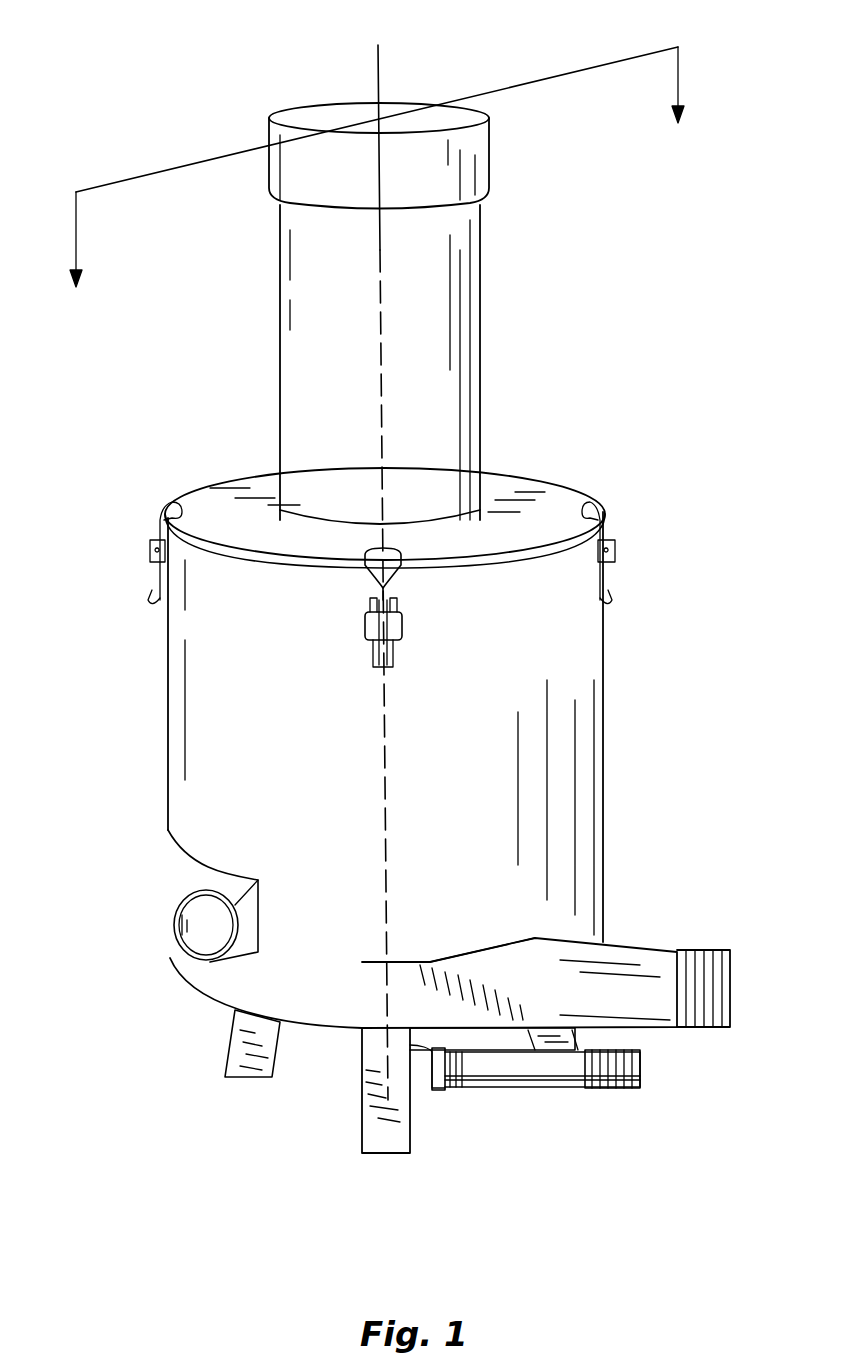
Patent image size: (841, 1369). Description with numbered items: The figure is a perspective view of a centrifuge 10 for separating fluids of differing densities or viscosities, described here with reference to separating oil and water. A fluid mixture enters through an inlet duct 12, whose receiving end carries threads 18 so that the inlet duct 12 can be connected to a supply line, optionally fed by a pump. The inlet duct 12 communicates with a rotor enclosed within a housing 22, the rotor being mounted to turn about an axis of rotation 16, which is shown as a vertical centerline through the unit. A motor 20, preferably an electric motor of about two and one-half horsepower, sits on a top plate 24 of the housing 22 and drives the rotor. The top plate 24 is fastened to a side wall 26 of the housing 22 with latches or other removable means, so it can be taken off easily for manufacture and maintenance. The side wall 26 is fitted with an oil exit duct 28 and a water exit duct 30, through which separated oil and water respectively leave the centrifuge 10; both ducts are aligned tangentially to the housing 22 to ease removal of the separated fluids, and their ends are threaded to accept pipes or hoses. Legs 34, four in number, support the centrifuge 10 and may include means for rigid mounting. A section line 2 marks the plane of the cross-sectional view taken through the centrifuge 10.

The section line 2- 2 is at (376, 176).
The centrifuge 10 is at (682, 404).
The inlet duct 12 is at (550, 1072).
The axis of rotation 16 is at (379, 63).
The threads 18 is at (640, 1088).
The motor 20 is at (379, 313).
The housing 22 is at (617, 645).
The top plate 24 is at (204, 508).
The side wall 26 is at (560, 800).
The oil exit duct 28 is at (722, 960).
The water exit duct 30 is at (172, 902).
The legs 34 is at (366, 1118).